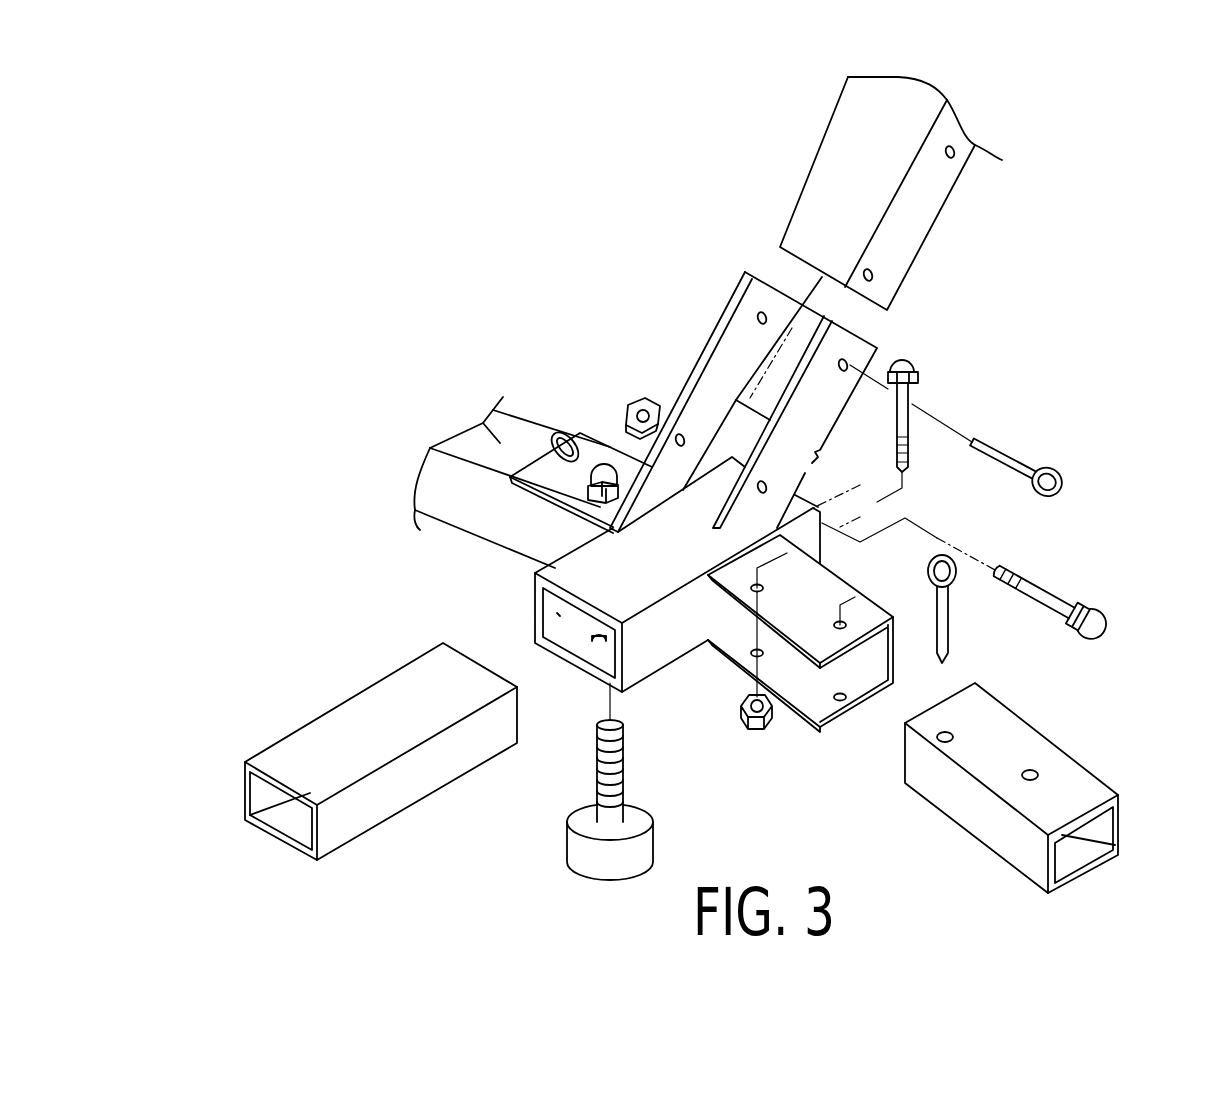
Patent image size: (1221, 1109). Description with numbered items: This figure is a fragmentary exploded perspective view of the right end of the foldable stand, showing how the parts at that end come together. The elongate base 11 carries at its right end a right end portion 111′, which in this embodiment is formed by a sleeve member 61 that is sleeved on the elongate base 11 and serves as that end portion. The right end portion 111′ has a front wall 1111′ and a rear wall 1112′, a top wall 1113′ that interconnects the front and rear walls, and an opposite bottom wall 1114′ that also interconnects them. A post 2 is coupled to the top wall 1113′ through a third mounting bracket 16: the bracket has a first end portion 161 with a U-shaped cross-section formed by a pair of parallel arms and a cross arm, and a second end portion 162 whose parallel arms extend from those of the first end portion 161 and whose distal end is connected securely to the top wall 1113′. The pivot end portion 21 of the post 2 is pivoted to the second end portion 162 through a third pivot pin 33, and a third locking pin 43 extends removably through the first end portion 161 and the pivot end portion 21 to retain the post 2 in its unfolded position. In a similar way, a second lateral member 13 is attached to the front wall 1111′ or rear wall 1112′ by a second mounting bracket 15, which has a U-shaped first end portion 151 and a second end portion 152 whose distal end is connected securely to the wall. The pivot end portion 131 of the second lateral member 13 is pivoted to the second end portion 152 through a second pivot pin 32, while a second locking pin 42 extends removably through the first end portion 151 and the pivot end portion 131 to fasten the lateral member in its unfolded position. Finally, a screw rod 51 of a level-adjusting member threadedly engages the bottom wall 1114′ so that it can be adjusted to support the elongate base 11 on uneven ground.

The post 2 is at (853, 147).
The pivot end portion 21 is at (830, 188).
The third mounting bracket 16 is at (772, 284).
The first end portion 161 is at (720, 375).
The second end portion 162 is at (750, 513).
The right end portion 111′ is at (535, 615).
The front wall 1111′ is at (665, 650).
The rear wall 1112′ is at (557, 613).
The bottom wall 1114′ is at (587, 641).
The top wall 1113′ is at (600, 577).
The sleeve member 61 is at (645, 563).
The elongate base 11 is at (332, 737).
The second lateral member 13 is at (453, 445).
The pivot end portion 131 is at (483, 423).
The second mounting bracket 15 is at (533, 461).
The second end portion 152 is at (735, 580).
The first end portion 151 is at (810, 690).
The second pivot pin 32 is at (597, 478).
The third locking pin 43 is at (1000, 447).
The third pivot pin 33 is at (1100, 623).
The second locking pin 42 is at (558, 432).
The screw rod 51 is at (590, 868).